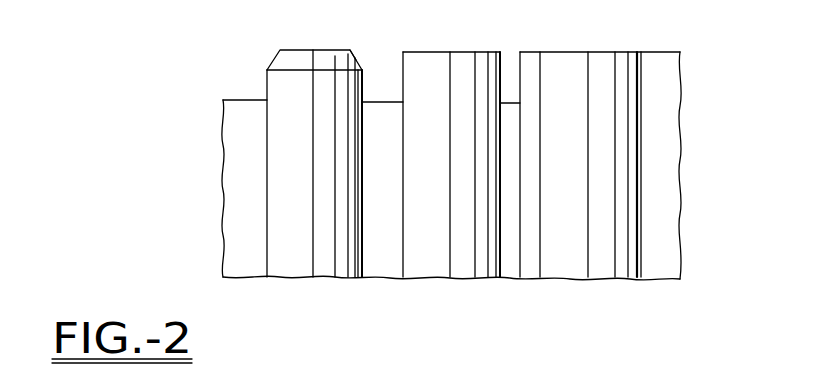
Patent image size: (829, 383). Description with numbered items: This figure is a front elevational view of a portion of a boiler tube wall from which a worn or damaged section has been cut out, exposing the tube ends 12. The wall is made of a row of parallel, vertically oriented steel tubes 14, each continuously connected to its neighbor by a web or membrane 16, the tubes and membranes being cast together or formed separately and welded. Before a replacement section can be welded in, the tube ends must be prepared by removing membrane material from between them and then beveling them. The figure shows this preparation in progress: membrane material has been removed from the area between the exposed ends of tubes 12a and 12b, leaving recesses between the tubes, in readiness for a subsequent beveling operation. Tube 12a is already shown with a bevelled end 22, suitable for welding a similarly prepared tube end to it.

The tube ends 12 is at (625, 52).
The tube 12a is at (267, 74).
The tube 12b is at (423, 52).
The tubes 14 is at (320, 270).
The web or membrane 16 is at (535, 52).
The bevelled end 22 is at (275, 57).